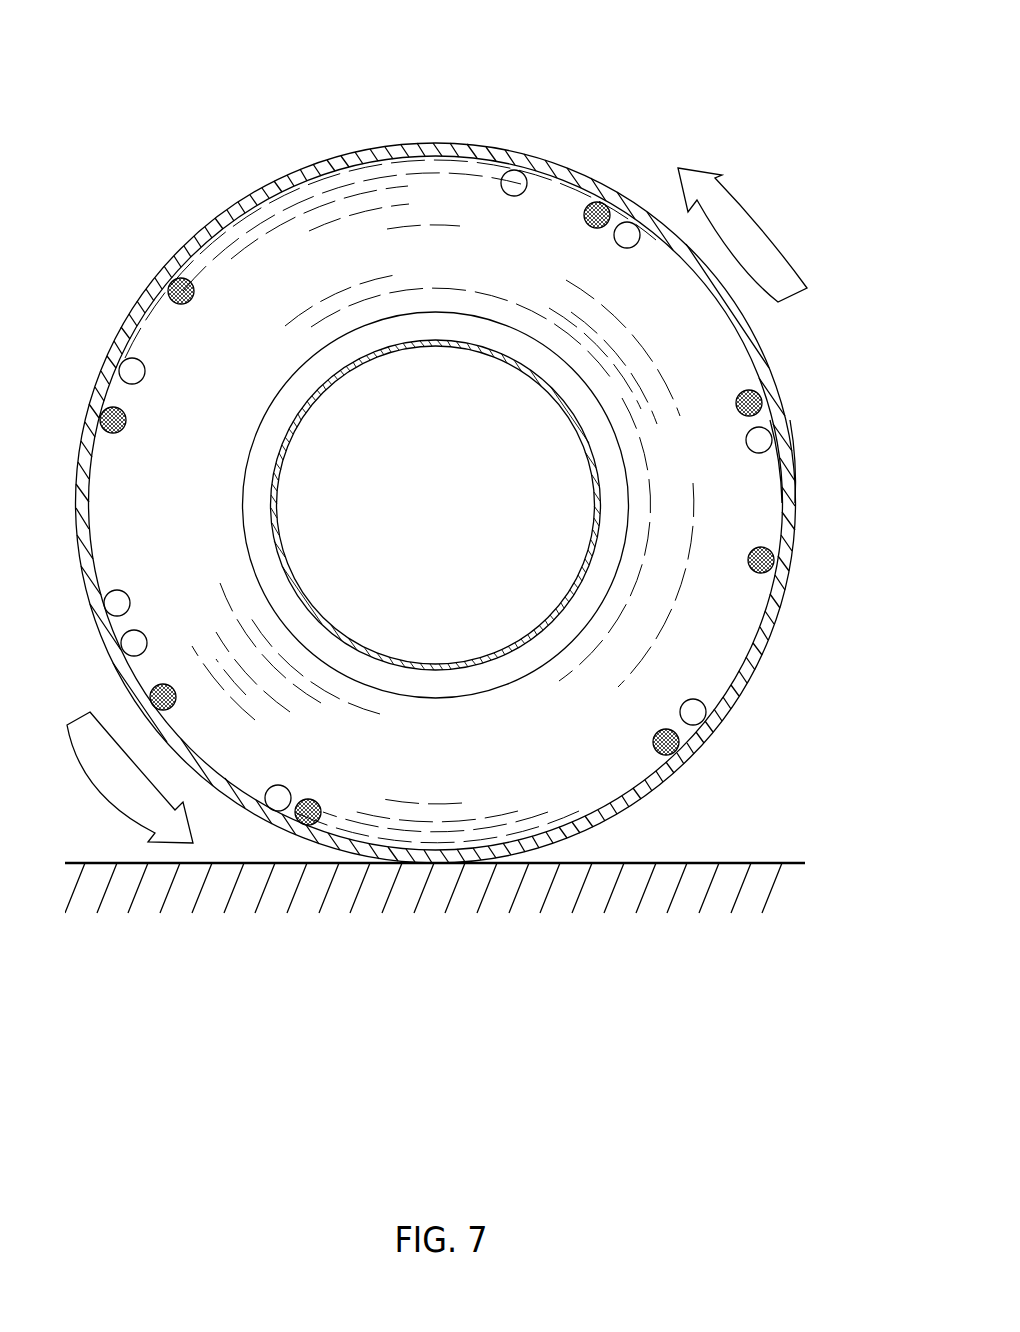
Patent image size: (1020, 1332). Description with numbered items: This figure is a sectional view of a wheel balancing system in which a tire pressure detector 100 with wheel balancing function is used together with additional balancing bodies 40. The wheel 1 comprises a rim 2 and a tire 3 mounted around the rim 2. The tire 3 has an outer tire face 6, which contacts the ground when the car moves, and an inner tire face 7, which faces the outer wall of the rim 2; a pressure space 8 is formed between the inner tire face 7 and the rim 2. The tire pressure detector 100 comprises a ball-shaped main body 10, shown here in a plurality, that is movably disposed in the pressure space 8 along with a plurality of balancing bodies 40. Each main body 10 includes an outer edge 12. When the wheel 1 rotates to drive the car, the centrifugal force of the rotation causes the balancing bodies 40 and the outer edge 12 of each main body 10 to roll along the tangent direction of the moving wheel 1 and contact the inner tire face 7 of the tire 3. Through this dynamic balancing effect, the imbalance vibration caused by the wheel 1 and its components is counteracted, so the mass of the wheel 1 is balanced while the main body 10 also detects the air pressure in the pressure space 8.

The wheel 1 is at (352, 145).
The rim 2 is at (530, 640).
The tire 3 is at (576, 120).
The outer tire face 6 is at (589, 188).
The inner tire face 7 is at (567, 192).
The pressure space 8 is at (820, 697).
The main body 10 is at (773, 428).
The outer edge 12 is at (757, 455).
The balancing body 40 is at (765, 388).
The tire pressure detector 100 is at (785, 455).